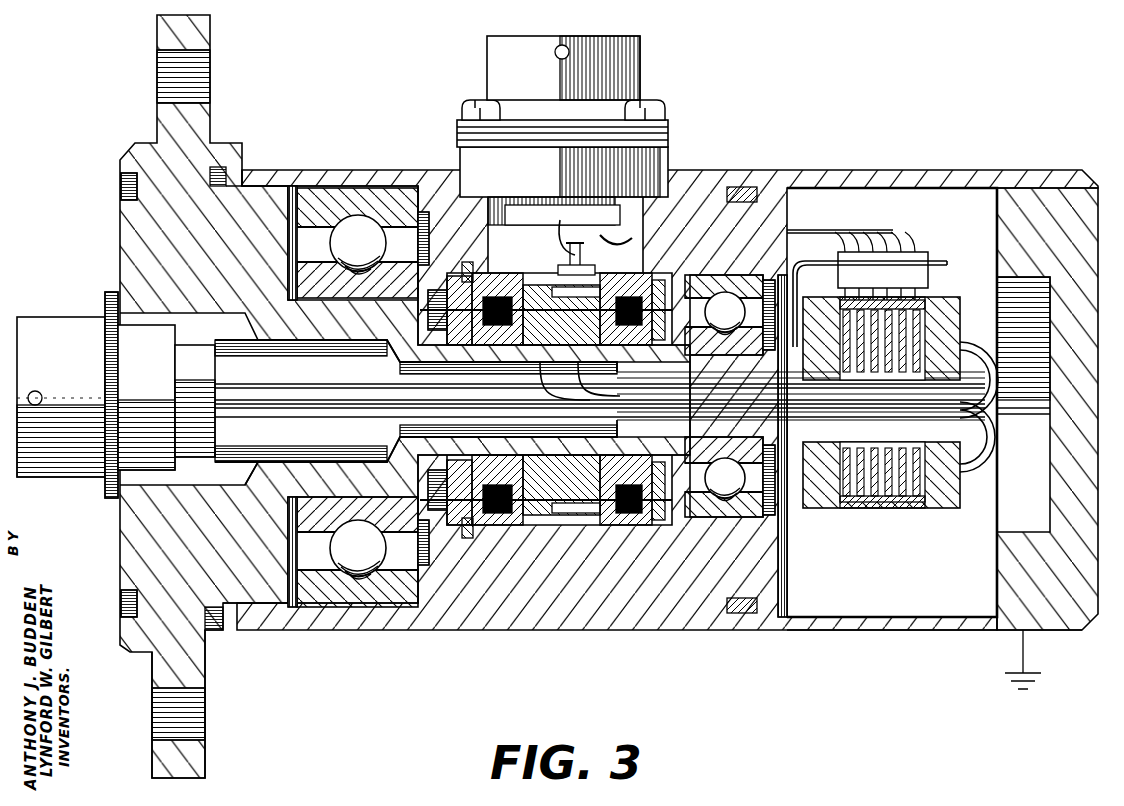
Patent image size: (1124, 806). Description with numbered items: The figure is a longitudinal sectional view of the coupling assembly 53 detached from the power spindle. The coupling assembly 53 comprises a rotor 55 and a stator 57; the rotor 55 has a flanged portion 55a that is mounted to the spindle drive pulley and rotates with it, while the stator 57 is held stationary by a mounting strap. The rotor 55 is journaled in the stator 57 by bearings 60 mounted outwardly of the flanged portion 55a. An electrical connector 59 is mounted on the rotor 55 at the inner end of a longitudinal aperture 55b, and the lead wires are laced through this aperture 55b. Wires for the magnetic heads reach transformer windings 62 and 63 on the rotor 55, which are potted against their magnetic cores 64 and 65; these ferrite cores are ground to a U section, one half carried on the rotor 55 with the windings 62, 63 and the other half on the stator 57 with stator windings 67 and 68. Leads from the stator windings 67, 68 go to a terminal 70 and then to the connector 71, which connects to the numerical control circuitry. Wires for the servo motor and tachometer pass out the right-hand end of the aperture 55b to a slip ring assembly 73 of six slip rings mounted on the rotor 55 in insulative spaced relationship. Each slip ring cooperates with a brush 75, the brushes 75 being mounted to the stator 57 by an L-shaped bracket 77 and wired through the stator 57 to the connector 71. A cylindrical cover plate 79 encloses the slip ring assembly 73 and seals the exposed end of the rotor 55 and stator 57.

The coupling assembly 53 is at (557, 396).
The rotor 55 is at (118, 528).
The flanged portion 55a is at (205, 765).
The longitudinal aperture 55b is at (287, 455).
The stator 57 is at (558, 622).
The electrical connector 59 is at (47, 317).
The bearings 60 is at (352, 205).
The transformer winding 62 is at (548, 383).
The transformer winding 63 is at (625, 333).
The magnetic core 64 is at (533, 285).
The magnetic core 65 is at (653, 278).
The stator winding 67 is at (473, 275).
The stator winding 68 is at (620, 297).
The terminal 70 is at (575, 245).
The connector 71 is at (641, 52).
The slip ring assembly 73 is at (942, 291).
The brush 75 is at (918, 247).
The L-shaped bracket 77 is at (935, 262).
The cylindrical cover plate 79 is at (874, 633).